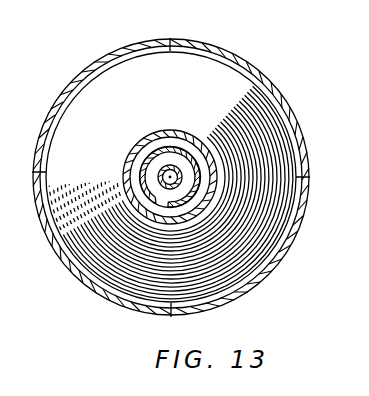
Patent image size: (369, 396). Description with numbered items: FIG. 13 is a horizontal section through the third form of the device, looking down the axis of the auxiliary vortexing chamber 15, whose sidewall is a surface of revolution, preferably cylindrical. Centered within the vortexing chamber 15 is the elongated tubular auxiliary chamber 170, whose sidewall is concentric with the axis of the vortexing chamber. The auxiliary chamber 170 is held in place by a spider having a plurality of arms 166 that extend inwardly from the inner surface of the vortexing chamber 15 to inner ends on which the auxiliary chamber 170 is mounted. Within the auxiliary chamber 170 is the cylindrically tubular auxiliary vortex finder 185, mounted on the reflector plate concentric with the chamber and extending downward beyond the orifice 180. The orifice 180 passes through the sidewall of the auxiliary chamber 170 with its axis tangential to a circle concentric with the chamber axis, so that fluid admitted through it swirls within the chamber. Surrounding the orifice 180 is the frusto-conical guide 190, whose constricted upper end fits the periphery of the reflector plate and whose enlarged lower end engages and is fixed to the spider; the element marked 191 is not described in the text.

The vortexing chamber 15 is at (76, 72).
The arms 166 is at (170, 51).
The frusto-conical guide 190 is at (128, 124).
The hub ring 191 is at (195, 139).
The orifice 180 is at (163, 199).
The auxiliary chamber 170 is at (182, 177).
The auxiliary vortex finder 185 is at (158, 177).